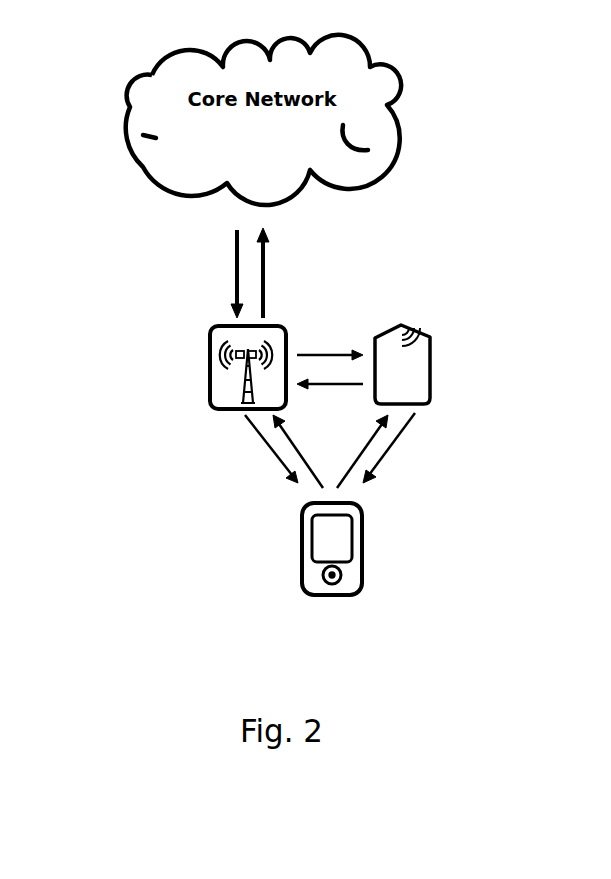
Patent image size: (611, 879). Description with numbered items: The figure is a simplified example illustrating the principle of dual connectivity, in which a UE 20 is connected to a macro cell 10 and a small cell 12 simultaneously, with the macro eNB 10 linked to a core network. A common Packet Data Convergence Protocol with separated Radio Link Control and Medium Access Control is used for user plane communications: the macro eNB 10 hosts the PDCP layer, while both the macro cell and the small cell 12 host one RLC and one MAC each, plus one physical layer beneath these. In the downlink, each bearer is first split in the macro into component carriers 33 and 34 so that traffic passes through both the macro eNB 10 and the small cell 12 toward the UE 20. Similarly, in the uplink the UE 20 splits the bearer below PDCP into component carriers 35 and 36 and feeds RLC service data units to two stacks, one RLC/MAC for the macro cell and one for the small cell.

The macro eNB 10 is at (222, 408).
The small cell 12 is at (403, 323).
The UE 20 is at (352, 577).
The component carrier 33 is at (268, 448).
The component carrier 34 is at (382, 458).
The component carrier 35 is at (283, 462).
The component carrier 36 is at (380, 438).